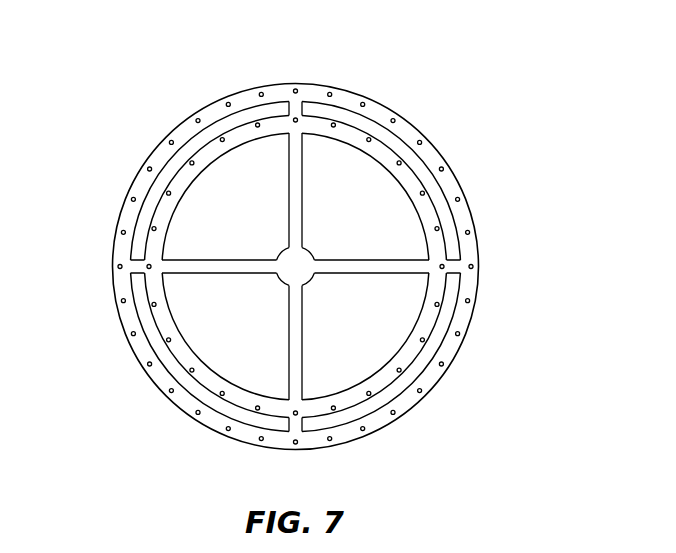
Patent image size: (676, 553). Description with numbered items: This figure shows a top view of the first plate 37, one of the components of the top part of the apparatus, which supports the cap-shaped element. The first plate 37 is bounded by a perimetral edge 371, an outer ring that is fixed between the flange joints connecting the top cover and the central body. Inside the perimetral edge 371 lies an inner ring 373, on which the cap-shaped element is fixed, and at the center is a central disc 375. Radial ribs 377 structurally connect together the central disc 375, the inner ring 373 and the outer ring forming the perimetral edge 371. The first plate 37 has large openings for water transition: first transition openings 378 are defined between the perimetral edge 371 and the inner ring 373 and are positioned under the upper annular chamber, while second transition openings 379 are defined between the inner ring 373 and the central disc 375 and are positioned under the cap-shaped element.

The first plate 37 is at (301, 237).
The perimetral edge 371 is at (137, 180).
The inner ring 373 is at (282, 266).
The central disc 375 is at (296, 262).
The radial ribs 377 is at (270, 257).
The first transition openings 378 is at (373, 127).
The second transition openings 379 is at (217, 307).